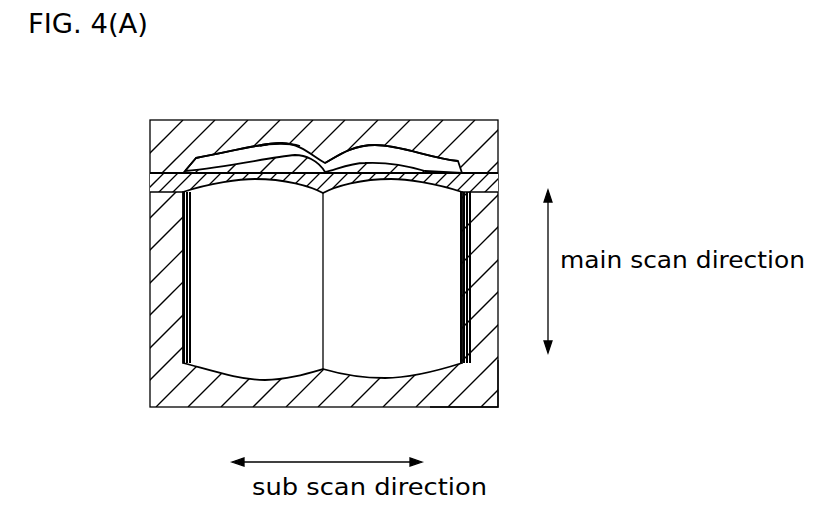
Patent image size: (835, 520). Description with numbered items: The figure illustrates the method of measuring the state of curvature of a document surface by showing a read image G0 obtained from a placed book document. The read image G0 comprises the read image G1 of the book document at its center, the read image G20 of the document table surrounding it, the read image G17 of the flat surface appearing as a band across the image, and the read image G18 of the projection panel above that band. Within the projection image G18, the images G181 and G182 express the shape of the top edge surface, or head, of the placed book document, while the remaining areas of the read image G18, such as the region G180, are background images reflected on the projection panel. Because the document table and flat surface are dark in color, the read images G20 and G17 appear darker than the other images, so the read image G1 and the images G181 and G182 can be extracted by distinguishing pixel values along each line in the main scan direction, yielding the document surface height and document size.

The read image G0 is at (449, 120).
The read image of flat surface G17 is at (148, 188).
The read image of projection panel G18 is at (400, 63).
The lens element G180 is at (240, 102).
The image G181 is at (287, 137).
The image G182 is at (355, 143).
The read image of book document G1 is at (345, 355).
The read image of document table G20 is at (458, 395).